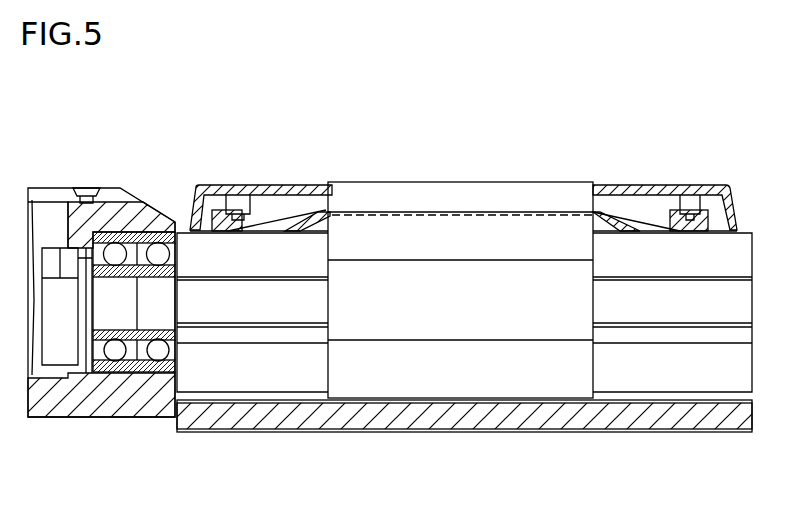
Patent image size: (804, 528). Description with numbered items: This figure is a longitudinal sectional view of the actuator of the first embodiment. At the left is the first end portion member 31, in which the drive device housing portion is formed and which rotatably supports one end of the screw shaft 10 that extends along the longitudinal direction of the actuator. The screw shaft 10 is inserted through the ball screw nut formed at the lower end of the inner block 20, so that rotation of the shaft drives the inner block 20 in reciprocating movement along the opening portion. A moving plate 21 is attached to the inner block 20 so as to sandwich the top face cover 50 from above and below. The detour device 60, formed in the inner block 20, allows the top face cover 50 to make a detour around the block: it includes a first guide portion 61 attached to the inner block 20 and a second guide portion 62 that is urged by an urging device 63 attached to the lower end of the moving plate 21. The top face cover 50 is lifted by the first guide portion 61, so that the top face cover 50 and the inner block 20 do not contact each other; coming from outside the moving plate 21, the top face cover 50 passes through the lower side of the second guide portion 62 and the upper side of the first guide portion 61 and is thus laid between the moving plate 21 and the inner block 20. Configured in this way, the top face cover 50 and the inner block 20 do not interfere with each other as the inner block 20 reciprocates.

The screw shaft 10 is at (228, 302).
The inner block 20 is at (445, 378).
The moving plate 21 is at (697, 210).
The first end portion member 31 is at (85, 395).
The top face cover 50 is at (645, 213).
The detour device 60 is at (383, 88).
The first guide portion 61 is at (322, 185).
The second guide portion 62 is at (252, 185).
The urging device 63 is at (237, 185).